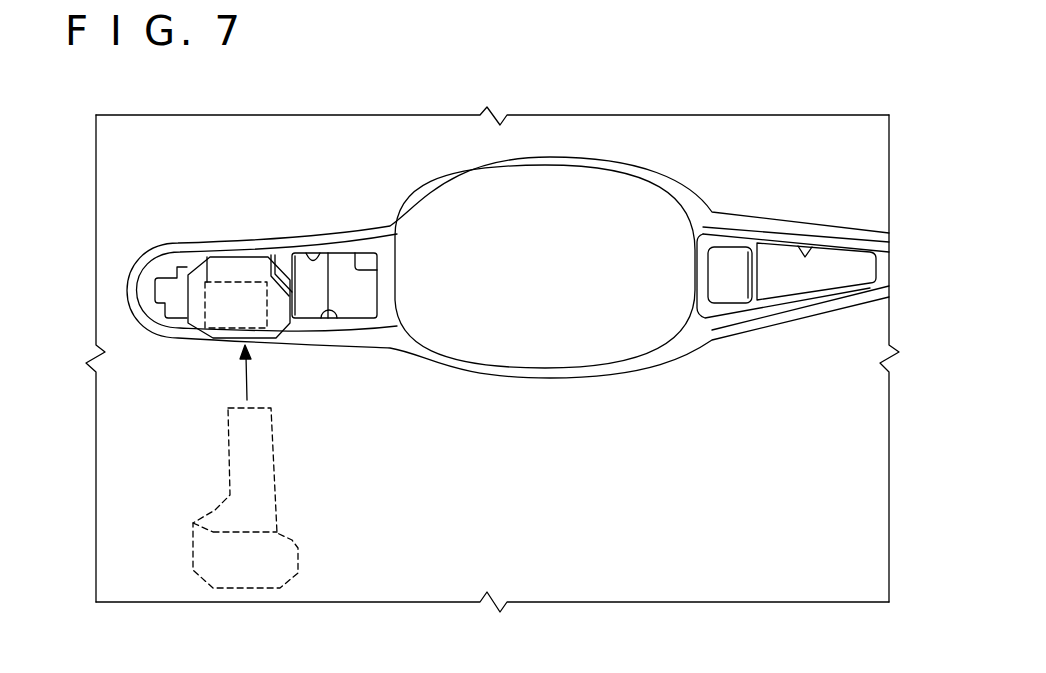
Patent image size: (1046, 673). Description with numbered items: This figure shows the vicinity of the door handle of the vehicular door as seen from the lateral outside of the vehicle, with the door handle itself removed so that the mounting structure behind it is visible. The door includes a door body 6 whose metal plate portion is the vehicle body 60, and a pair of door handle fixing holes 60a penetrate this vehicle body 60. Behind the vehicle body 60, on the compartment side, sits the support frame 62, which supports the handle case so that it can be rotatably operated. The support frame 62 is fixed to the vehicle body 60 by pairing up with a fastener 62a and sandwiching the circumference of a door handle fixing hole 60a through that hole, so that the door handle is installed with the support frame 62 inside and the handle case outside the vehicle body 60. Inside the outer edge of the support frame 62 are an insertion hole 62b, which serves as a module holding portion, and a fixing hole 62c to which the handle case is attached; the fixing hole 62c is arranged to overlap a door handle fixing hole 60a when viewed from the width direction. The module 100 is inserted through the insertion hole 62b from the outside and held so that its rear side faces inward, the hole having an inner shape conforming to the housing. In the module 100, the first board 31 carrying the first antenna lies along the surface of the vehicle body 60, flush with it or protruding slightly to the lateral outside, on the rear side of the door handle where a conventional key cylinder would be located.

The door body 6 is at (721, 488).
The vehicle body 60 is at (508, 216).
The door handle fixing hole 60a is at (305, 257).
The support frame 62 is at (353, 290).
The fastener 62a is at (730, 240).
The insertion hole 62b is at (253, 253).
The fixing hole 62c is at (332, 308).
The first board 31 is at (200, 250).
The module 100 is at (203, 335).